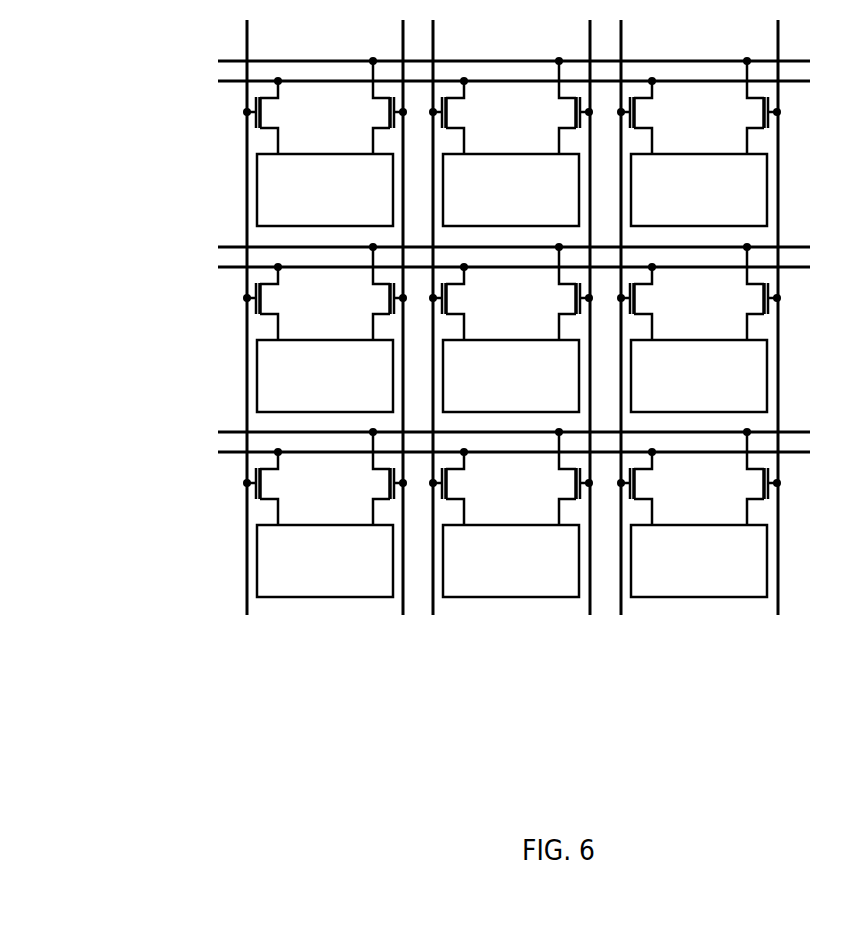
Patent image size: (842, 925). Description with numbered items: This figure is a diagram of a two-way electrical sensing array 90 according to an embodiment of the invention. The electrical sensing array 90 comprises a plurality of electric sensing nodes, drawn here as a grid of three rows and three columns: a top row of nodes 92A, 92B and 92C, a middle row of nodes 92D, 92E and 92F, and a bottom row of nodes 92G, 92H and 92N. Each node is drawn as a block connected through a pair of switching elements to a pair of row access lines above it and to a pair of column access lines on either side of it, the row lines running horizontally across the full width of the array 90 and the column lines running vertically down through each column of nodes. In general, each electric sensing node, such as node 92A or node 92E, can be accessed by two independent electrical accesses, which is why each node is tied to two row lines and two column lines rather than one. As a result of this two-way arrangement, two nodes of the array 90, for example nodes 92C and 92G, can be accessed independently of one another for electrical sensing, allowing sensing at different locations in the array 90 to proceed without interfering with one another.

The electrical sensing array 90 is at (149, 191).
The node 92A is at (307, 200).
The node 92B is at (511, 141).
The node 92C is at (699, 141).
The node 92D is at (325, 327).
The node 92E is at (511, 327).
The node 92F is at (699, 327).
The node 92G is at (325, 512).
The node 92H is at (511, 512).
The node 92N is at (699, 512).